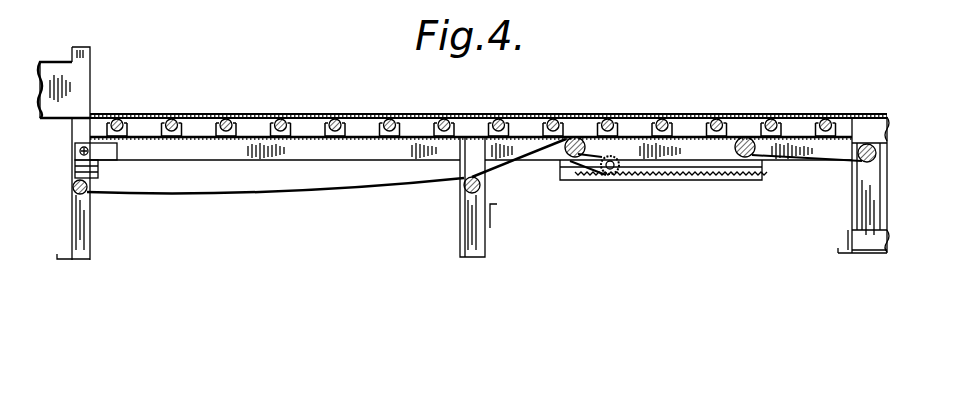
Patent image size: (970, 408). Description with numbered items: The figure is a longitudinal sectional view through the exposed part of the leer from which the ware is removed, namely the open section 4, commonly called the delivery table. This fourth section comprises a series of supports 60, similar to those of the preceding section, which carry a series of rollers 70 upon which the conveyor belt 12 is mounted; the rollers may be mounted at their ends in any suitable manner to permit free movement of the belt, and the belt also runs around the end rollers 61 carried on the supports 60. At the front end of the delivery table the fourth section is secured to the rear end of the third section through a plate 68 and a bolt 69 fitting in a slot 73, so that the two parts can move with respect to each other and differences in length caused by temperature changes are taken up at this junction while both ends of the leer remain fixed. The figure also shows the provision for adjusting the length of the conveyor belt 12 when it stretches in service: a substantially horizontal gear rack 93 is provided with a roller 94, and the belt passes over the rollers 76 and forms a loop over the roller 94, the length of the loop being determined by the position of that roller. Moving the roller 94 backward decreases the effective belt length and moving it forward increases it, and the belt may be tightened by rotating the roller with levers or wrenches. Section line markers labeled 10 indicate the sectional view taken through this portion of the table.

The open section 4 is at (323, 86).
The slots 10 is at (638, 100).
The conveyor belt 12 is at (372, 112).
The supports 60 is at (82, 238).
The belt roller 61 is at (88, 192).
The plate 68 is at (97, 150).
The bolt 69 is at (80, 150).
The rollers 70 is at (232, 118).
The slot 73 is at (75, 166).
The rollers 76 is at (752, 152).
The gear rack 93 is at (690, 180).
The roller 94 is at (612, 175).